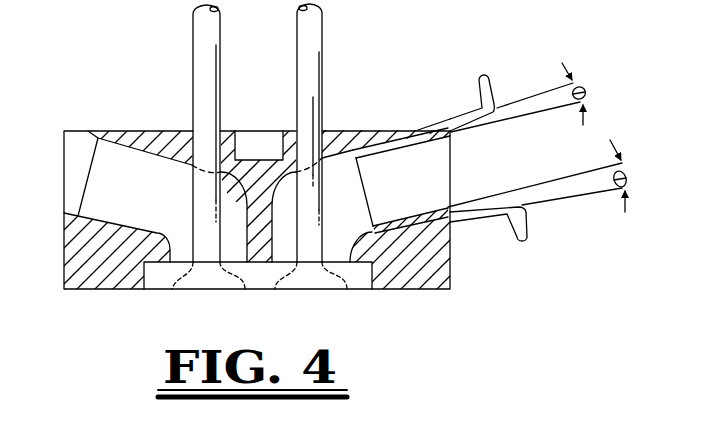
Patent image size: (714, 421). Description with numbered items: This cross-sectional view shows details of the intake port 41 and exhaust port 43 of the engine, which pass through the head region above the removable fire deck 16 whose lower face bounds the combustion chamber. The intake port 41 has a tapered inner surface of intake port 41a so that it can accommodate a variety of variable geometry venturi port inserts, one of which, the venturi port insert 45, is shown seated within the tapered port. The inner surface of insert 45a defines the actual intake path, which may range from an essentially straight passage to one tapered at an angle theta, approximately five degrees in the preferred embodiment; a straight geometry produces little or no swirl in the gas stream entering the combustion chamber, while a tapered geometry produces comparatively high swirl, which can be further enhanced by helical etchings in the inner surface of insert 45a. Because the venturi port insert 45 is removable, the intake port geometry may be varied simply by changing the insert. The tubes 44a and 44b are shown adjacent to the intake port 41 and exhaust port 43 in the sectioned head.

The fire deck 16 is at (360, 275).
The intake port 41 is at (418, 195).
The inner surface of intake port 41a is at (372, 149).
The exhaust port 43 is at (153, 201).
The tube 44a is at (313, 62).
The tube 44b is at (201, 64).
The venturi port insert 45 is at (450, 118).
The inner surface of insert 45a is at (430, 137).